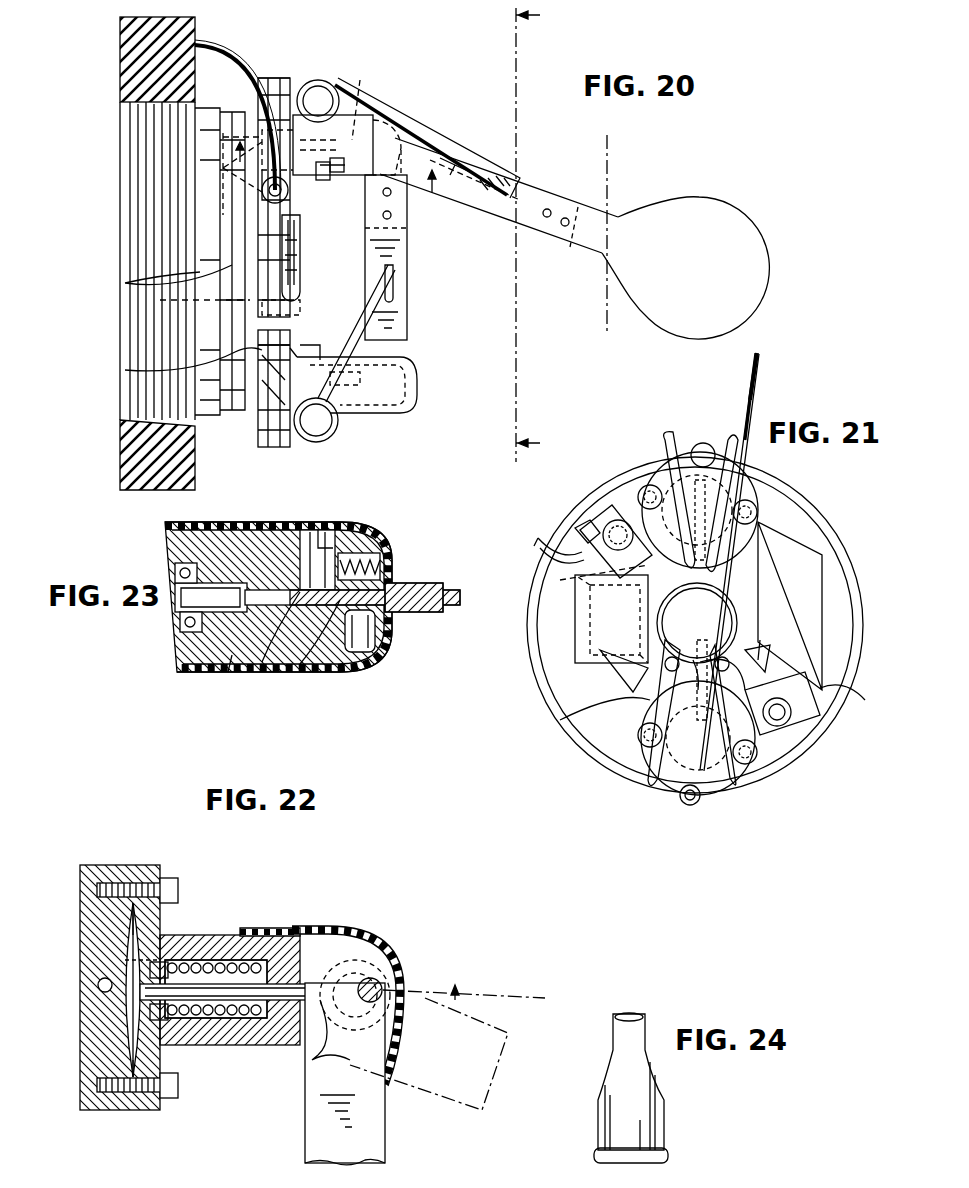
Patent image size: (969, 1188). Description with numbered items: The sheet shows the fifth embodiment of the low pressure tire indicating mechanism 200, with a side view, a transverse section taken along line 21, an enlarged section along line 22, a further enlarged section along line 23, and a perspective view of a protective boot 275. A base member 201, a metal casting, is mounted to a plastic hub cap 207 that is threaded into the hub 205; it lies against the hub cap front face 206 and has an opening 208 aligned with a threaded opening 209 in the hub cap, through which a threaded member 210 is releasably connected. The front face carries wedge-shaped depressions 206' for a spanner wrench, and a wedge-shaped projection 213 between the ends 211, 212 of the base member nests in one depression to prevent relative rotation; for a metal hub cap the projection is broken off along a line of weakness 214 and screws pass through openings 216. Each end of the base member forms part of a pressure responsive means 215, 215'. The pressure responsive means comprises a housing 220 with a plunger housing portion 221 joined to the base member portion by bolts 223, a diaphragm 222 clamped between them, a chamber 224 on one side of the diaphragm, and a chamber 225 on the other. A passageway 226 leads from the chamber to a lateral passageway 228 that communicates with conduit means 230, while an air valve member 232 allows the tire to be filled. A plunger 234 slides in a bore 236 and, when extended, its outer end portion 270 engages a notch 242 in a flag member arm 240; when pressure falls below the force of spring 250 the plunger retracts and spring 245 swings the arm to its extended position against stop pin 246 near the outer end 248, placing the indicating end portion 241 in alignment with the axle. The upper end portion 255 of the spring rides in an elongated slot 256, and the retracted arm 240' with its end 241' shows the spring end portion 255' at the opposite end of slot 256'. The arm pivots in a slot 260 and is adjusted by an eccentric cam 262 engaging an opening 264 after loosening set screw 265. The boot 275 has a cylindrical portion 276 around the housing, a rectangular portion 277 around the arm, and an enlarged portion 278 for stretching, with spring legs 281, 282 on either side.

In FIG. 20, the low pressure tire indicating mechanism 200 is at (432, 296).
In FIG. 20, the base member 201 is at (270, 78).
In FIG. 21, the base member 201 is at (650, 712).
In FIG. 22, the base member 201 is at (133, 900).
In FIG. 20, the hub 205 is at (128, 62).
In FIG. 20, the hub cap front face 206 is at (297, 311).
In FIG. 21, the hub cap front face 206 is at (712, 625).
In FIG. 20, the wedge-shaped channels or depressions 206' is at (166, 359).
In FIG. 20, the plastic hub cap 207 is at (132, 145).
In FIG. 20, the opening 208 is at (298, 222).
In FIG. 20, the threaded opening 209 is at (160, 305).
In FIG. 20, the threaded member 210 is at (295, 268).
In FIG. 21, the threaded member 210 is at (738, 620).
In FIG. 20, the end of base member 211 is at (262, 78).
In FIG. 22, the end of base member 211 is at (90, 872).
In FIG. 20, the end of base member 212 is at (262, 447).
In FIG. 20, the wedge-shaped projection 213 is at (232, 268).
In FIG. 21, the wedge-shaped projection 213 is at (600, 656).
In FIG. 21, the line of weakness 214 is at (585, 692).
In FIG. 20, the pressure responsive means 215 is at (337, 130).
In FIG. 22, the pressure responsive means 215 is at (230, 968).
In FIG. 20, the pressure responsive means 215' is at (341, 422).
In FIG. 21, the openings 216 is at (730, 668).
In FIG. 23, the housing 220 is at (178, 552).
In FIG. 22, the housing 220 is at (200, 935).
In FIG. 22, the plunger housing portion 221 is at (242, 1046).
In FIG. 22, the diaphragm 222 is at (133, 1030).
In FIG. 21, the bolts 223 is at (760, 508).
In FIG. 22, the bolts 223 is at (170, 1100).
In FIG. 22, the chamber 224 is at (136, 996).
In FIG. 22, the chamber 225 is at (188, 1020).
In FIG. 22, the passageway 226 is at (110, 968).
In FIG. 22, the passageway 228 is at (98, 985).
In FIG. 20, the conduit means 230 is at (207, 50).
In FIG. 21, the conduit means 230 is at (538, 548).
In FIG. 20, the air valve member 232 is at (323, 180).
In FIG. 21, the air valve member 232 is at (606, 528).
In FIG. 20, the plunger 234 is at (356, 100).
In FIG. 23, the plunger 234 is at (188, 600).
In FIG. 22, the plunger 234 is at (276, 984).
In FIG. 22, the bore 236 is at (305, 930).
In FIG. 20, the flag member arm 240 is at (499, 195).
In FIG. 21, the flag member arm 240 is at (611, 617).
In FIG. 23, the flag member arm 240 is at (361, 582).
In FIG. 22, the flag member arm 240 is at (373, 1074).
In FIG. 20, the retracted arm 240' is at (360, 294).
In FIG. 21, the retracted arm 240' is at (756, 557).
In FIG. 20, the indicating end portion 241 is at (685, 250).
In FIG. 21, the indicating end portion 241' is at (776, 407).
In FIG. 22, the notch 242 is at (330, 1035).
In FIG. 20, the spring 245 is at (303, 92).
In FIG. 23, the stop pin 246 is at (370, 656).
In FIG. 22, the stop pin 246 is at (400, 958).
In FIG. 22, the outer end 248 is at (408, 992).
In FIG. 23, the spring 250 is at (180, 573).
In FIG. 22, the spring 250 is at (212, 1022).
In FIG. 20, the upper end portion of spring 255 is at (470, 195).
In FIG. 21, the upper end portion of spring 255 is at (697, 623).
In FIG. 20, the spring end portion 255' is at (418, 274).
In FIG. 21, the spring end portion 255' is at (681, 655).
In FIG. 20, the elongated slot 256 is at (475, 164).
In FIG. 20, the elongated slot 256' is at (382, 333).
In FIG. 23, the slot 260 is at (318, 640).
In FIG. 22, the slot 260 is at (347, 936).
In FIG. 23, the eccentric cam 262 is at (332, 528).
In FIG. 22, the eccentric cam 262 is at (372, 942).
In FIG. 23, the opening 264 is at (270, 664).
In FIG. 23, the set screw 265 is at (374, 556).
In FIG. 23, the outer end portion of plunger 270 is at (228, 672).
In FIG. 22, the outer end portion of plunger 270 is at (354, 993).
In FIG. 20, the protective boot 275 is at (408, 119).
In FIG. 23, the protective boot 275 is at (214, 672).
In FIG. 24, the protective boot 275 is at (598, 1127).
In FIG. 20, the enlarged generally cylindrical portion 276 is at (352, 175).
In FIG. 24, the enlarged generally cylindrical portion 276 is at (650, 1118).
In FIG. 20, the reduced rectangular portion 277 is at (406, 185).
In FIG. 24, the reduced rectangular portion 277 is at (612, 1028).
In FIG. 24, the enlarged portion 278 is at (600, 1070).
In FIG. 20, the leg of spring 281 is at (442, 162).
In FIG. 21, the leg of spring 281 is at (690, 440).
In FIG. 22, the leg of spring 281 is at (168, 913).
In FIG. 21, the leg of spring 282 is at (722, 442).
In FIG. 22, the leg of spring 282 is at (134, 1100).
In FIG. 20, the section line 21 is at (561, 234).
In FIG. 20, the section line 22 is at (341, 174).
In FIG. 22, the section line 23 is at (272, 1075).